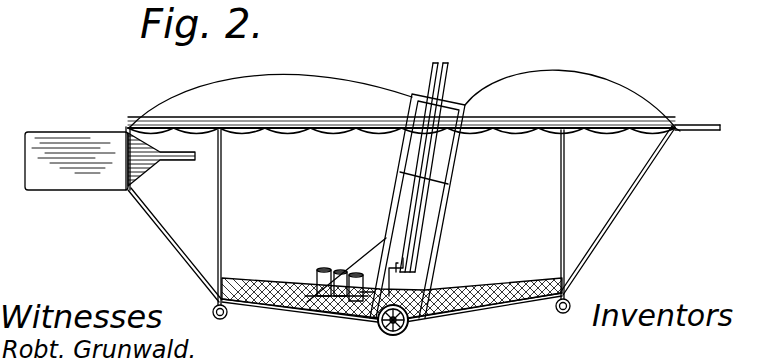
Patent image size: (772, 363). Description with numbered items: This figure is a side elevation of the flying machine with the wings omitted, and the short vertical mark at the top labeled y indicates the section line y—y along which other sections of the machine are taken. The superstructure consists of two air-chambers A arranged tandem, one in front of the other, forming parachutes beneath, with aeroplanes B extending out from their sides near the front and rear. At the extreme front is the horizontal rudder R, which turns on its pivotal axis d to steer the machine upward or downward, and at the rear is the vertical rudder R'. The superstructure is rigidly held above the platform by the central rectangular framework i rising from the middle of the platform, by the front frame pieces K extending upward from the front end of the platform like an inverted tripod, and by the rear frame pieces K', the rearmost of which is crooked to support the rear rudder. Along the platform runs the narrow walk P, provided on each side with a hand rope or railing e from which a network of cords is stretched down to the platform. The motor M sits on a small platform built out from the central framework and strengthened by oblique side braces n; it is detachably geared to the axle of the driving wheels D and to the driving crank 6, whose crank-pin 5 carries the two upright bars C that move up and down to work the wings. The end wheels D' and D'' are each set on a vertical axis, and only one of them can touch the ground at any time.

The section line y— y is at (413, 0).
The air-chamber A is at (303, 101).
The aeroplane B is at (192, 125).
The upright bar C is at (440, 76).
The horizontal rudder R is at (698, 107).
The pivotal axis d is at (676, 130).
The vertical rudder R' is at (76, 182).
The rear frame piece K' is at (175, 245).
The rectangular framework i is at (400, 172).
The oblique side brace n is at (385, 252).
The motor M is at (368, 253).
The crank-pin 5 is at (414, 274).
The driving crank 6 is at (391, 286).
The hand rope or railing e is at (265, 283).
The narrow walk P is at (294, 312).
The front frame piece K is at (617, 210).
The end wheel D'' is at (231, 329).
The end wheel D' is at (539, 318).
The driving wheel D is at (396, 334).